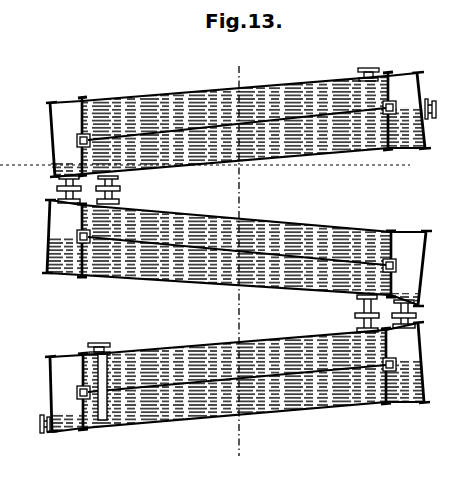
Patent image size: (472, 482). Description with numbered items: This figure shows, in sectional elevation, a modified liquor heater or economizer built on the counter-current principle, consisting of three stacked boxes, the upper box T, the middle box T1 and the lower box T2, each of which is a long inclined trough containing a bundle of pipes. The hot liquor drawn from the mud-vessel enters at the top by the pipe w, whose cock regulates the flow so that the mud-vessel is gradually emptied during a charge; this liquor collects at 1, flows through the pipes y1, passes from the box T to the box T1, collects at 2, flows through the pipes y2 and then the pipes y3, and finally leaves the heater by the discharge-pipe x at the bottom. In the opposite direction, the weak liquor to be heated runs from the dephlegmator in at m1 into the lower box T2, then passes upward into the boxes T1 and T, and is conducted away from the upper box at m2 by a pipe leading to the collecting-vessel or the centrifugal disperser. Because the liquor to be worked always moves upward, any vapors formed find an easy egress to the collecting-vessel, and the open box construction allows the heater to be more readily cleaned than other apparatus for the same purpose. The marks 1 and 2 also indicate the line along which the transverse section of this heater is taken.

The box T is at (238, 125).
The box T1 is at (237, 256).
The box T2 is at (237, 377).
The pipes y1 is at (215, 130).
The pipes y2 is at (208, 248).
The pipes y3 is at (204, 385).
The inlet m1 is at (99, 375).
The outlet m2 is at (369, 67).
The pipe w is at (438, 108).
The discharge-pipe x is at (39, 425).
The collecting point 1 is at (240, 360).
The collecting point 2 is at (243, 151).